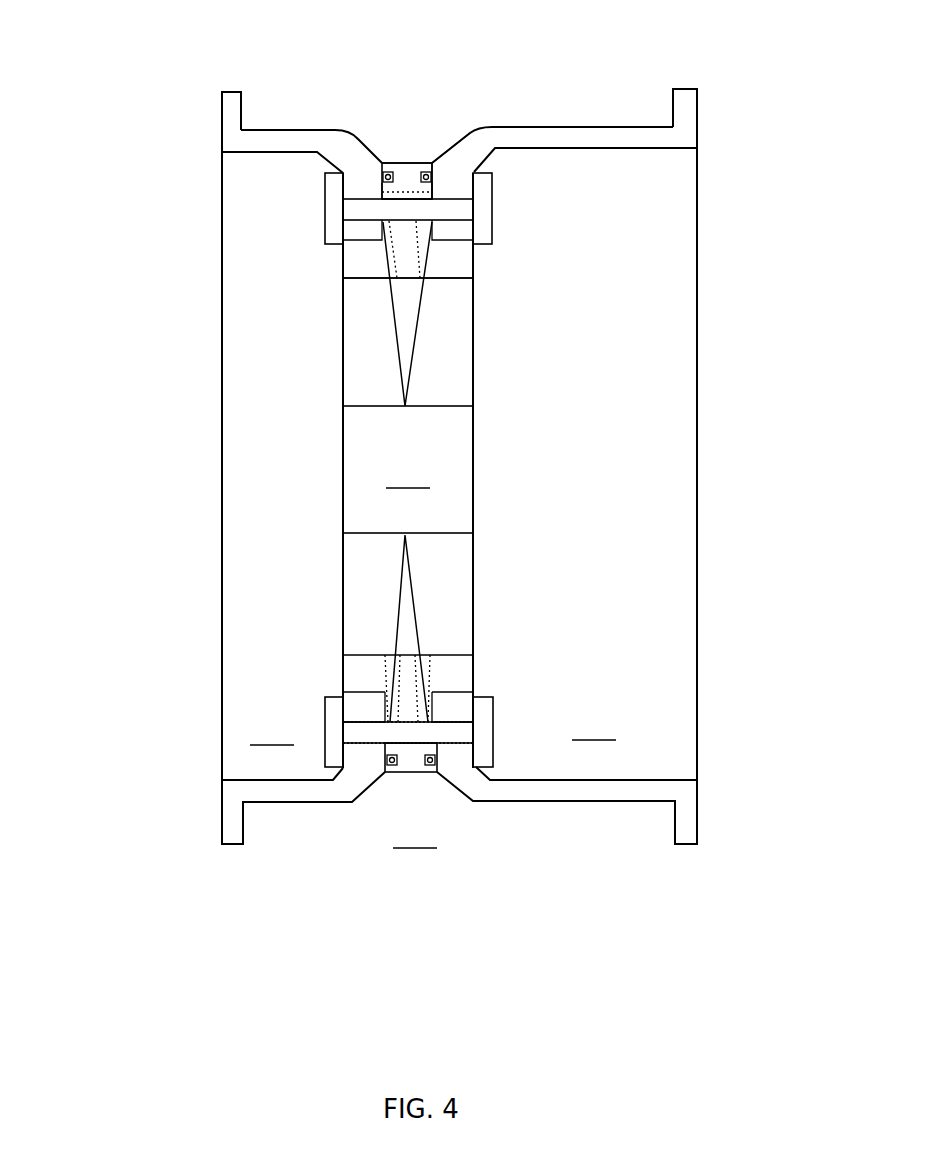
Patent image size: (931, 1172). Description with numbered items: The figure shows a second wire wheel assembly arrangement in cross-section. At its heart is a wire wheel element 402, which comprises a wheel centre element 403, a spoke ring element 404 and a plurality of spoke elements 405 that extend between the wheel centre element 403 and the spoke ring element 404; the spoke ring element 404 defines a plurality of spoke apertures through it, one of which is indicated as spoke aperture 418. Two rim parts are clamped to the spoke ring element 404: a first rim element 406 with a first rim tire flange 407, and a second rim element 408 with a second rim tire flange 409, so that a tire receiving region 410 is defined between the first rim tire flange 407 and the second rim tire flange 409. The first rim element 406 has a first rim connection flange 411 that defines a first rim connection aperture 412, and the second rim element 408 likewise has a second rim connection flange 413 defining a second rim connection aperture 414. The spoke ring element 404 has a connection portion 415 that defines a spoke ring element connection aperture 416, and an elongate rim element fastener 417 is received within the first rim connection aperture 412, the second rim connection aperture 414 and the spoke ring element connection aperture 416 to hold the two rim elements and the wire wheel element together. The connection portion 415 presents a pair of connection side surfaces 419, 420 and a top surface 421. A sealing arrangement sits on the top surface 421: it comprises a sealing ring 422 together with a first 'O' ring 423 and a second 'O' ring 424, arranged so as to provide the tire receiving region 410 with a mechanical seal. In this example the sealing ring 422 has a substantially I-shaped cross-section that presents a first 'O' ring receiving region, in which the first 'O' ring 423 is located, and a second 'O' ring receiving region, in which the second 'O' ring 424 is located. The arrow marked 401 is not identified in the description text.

The input beam/flow direction 401 is at (438, 888).
The wire wheel element 402 is at (408, 469).
The wheel centre element 403 is at (427, 533).
The spoke ring element 404 is at (452, 258).
The spoke elements 405 is at (410, 615).
The first rim element 406 is at (302, 455).
The first rim tire flange 407 is at (232, 104).
The second rim element 408 is at (564, 453).
The second rim tire flange 409 is at (683, 103).
The tire receiving region 410 is at (459, 810).
The first rim connection flange 411 is at (347, 162).
The first rim connection aperture 412 is at (339, 224).
The second rim connection flange 413 is at (478, 128).
The second rim connection aperture 414 is at (476, 223).
The connection portion 415 is at (418, 163).
The spoke ring element connection aperture 416 is at (406, 227).
The elongate rim element fastener 417 is at (483, 210).
The spoke aperture 418 is at (373, 273).
The connection side surface 419 is at (370, 191).
The connection side surface 420 is at (444, 190).
The top surface 421 is at (403, 176).
The sealing ring 422 is at (395, 163).
The first 'O' ring 423 is at (383, 170).
The second 'O' ring 424 is at (433, 163).